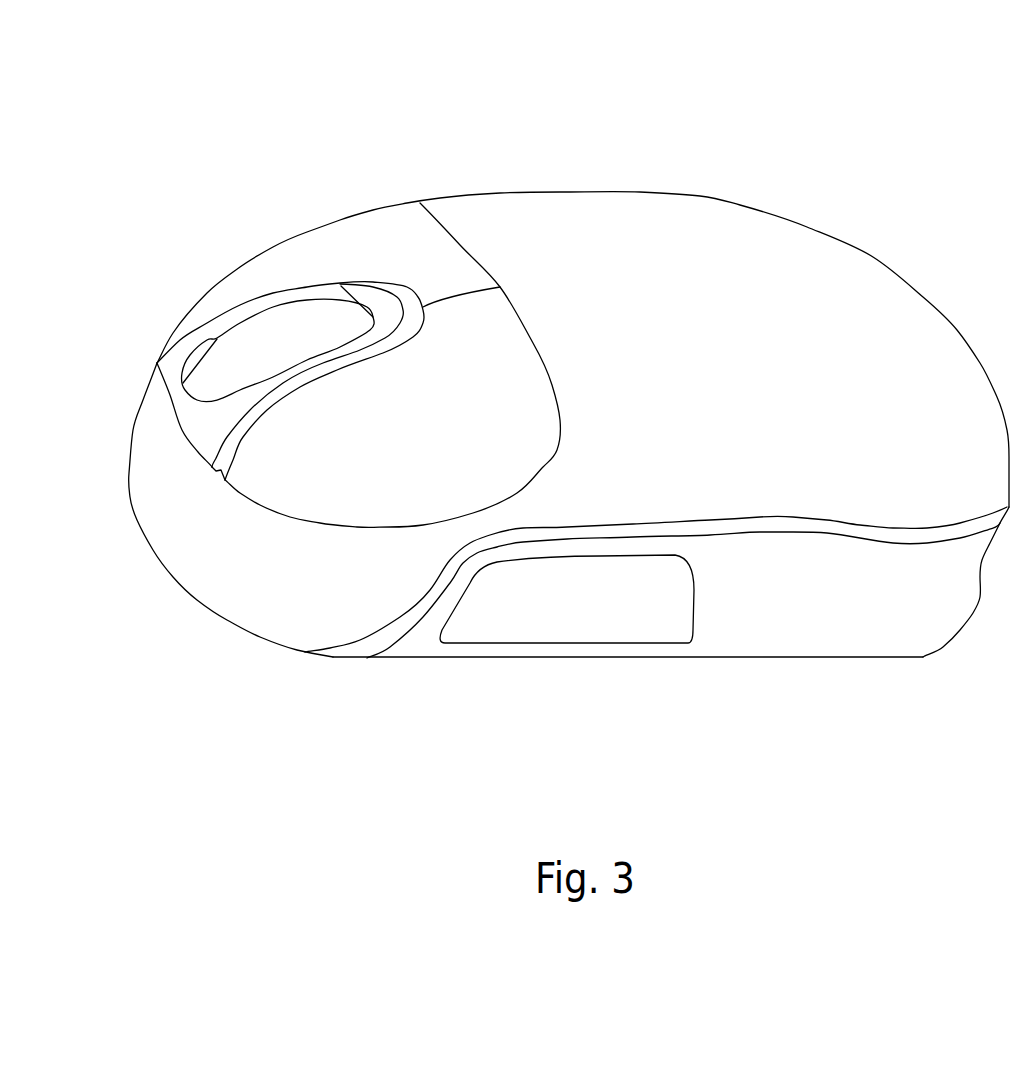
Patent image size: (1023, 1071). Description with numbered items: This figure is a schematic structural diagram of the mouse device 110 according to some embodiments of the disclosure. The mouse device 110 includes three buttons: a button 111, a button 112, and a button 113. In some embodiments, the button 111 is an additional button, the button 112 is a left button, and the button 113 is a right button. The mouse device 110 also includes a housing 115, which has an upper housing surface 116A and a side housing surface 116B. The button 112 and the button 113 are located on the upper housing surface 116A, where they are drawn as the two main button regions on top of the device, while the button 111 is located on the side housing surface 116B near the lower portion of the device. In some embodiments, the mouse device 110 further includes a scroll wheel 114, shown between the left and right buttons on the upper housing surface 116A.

The mouse device 110 is at (32, 72).
The button 111 is at (598, 633).
The button 112 is at (300, 500).
The button 113 is at (363, 230).
The scroll wheel 114 is at (273, 317).
The housing 115 is at (710, 203).
The upper housing surface 116A is at (632, 205).
The side housing surface 116B is at (825, 635).